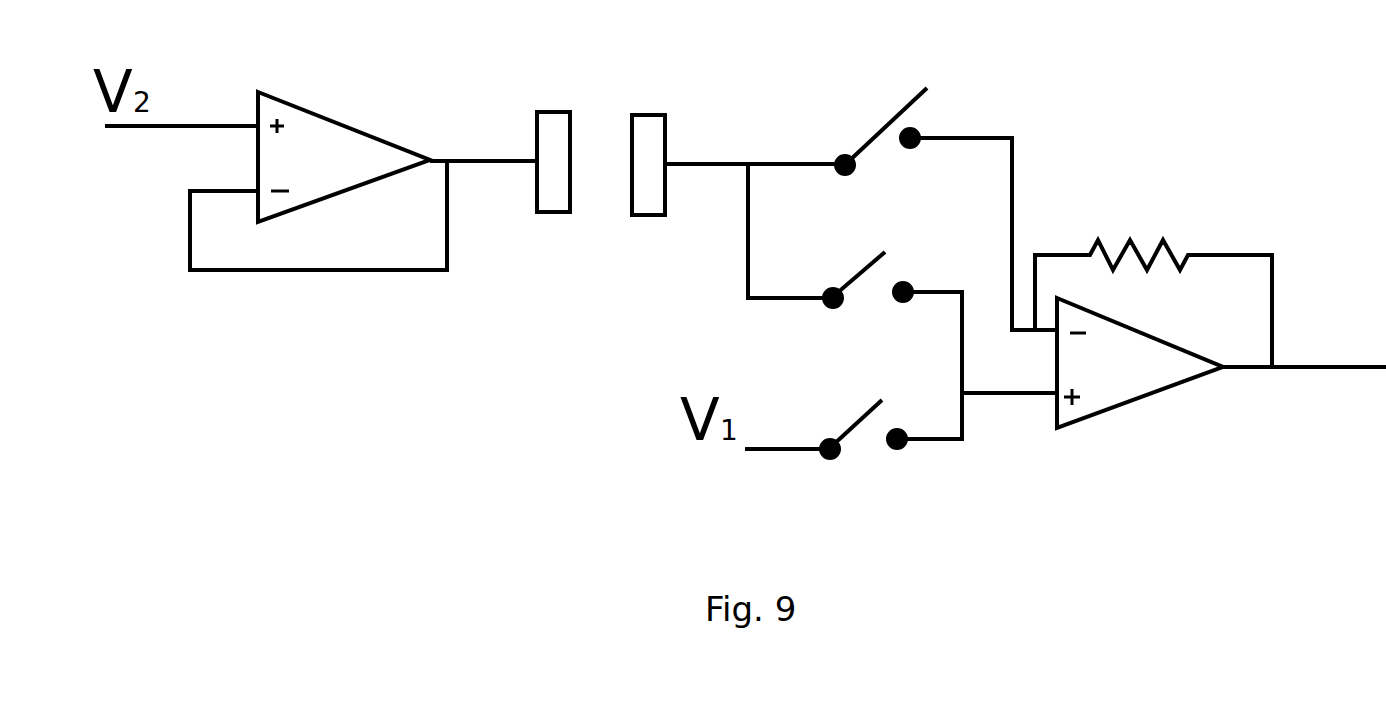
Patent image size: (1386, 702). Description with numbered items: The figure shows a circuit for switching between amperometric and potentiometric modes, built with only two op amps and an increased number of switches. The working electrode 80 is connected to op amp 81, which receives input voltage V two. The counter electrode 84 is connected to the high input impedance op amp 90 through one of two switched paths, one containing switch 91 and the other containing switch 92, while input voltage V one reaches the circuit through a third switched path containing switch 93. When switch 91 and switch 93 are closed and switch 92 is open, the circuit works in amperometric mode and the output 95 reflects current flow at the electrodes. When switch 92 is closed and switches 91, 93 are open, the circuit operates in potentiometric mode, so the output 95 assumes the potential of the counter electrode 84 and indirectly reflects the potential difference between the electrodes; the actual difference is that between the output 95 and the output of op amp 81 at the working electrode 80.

The op amp 81 is at (327, 150).
The working electrode 80 is at (555, 135).
The counter electrode 84 is at (650, 130).
The switch 91 is at (873, 127).
The switch 92 is at (862, 268).
The switch 93 is at (852, 427).
The high input impedance op amp 90 is at (1128, 372).
The output 95 is at (1362, 360).